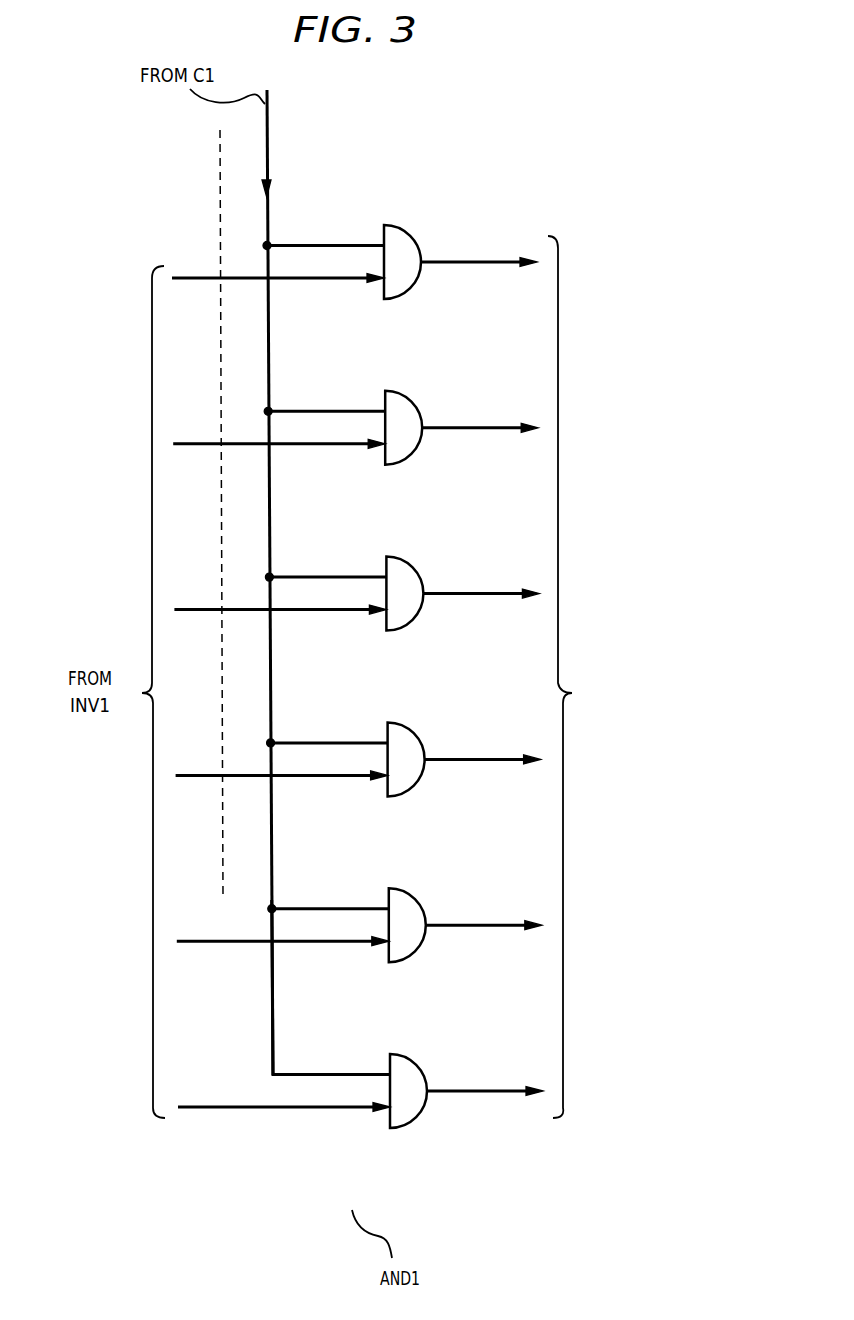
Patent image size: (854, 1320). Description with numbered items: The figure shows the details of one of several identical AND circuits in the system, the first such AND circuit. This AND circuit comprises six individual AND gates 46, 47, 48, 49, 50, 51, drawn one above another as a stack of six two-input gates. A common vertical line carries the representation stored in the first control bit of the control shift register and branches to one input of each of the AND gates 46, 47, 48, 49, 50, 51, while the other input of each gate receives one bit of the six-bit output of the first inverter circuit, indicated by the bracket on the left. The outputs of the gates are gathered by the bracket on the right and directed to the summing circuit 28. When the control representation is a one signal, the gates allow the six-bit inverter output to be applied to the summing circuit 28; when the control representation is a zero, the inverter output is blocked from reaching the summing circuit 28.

The AND gate 46 is at (398, 226).
The AND gate 47 is at (399, 392).
The AND gate 48 is at (400, 558).
The AND gate 49 is at (402, 723).
The AND gate 50 is at (403, 889).
The AND gate 51 is at (404, 1055).
The summing circuit 28 is at (629, 677).